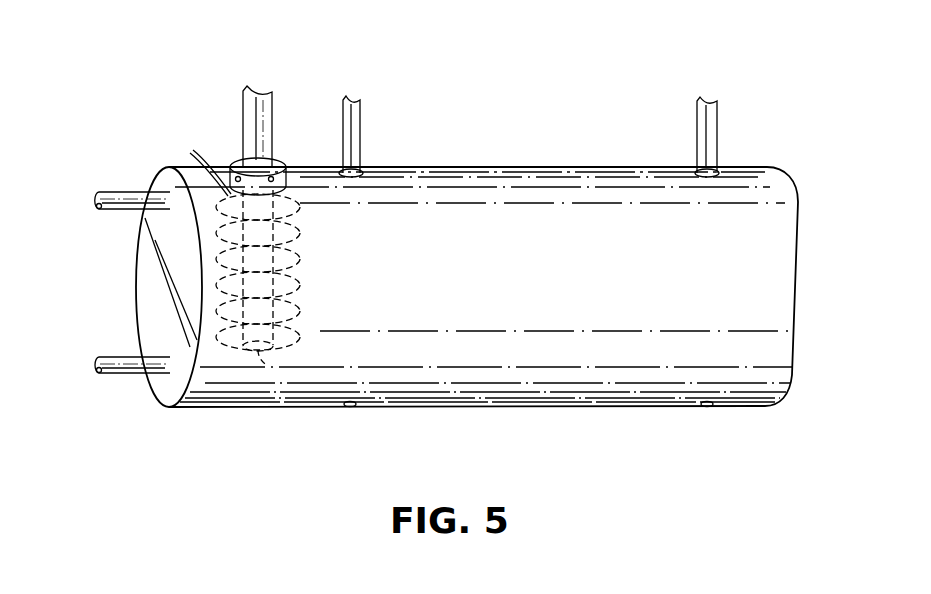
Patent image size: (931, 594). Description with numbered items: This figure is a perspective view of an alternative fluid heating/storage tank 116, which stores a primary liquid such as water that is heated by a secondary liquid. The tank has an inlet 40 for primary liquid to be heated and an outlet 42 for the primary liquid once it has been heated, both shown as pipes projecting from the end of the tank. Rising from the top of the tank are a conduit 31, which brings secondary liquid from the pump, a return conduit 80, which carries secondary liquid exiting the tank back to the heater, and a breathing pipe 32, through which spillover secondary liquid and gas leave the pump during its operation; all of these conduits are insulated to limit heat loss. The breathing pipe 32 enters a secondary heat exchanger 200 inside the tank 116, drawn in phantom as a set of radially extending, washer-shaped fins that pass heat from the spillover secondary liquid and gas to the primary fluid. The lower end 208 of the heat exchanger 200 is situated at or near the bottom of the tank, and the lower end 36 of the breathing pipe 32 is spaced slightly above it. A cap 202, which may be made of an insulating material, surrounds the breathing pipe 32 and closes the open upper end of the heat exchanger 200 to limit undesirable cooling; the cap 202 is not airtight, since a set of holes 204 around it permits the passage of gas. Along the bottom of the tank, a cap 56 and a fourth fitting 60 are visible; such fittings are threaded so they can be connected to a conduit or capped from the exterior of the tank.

The fluid heating/storage tank 116 is at (556, 132).
The breathing pipe 32 is at (243, 118).
The conduit 31 is at (362, 117).
The return conduit 80 is at (717, 113).
The outlet 42 is at (114, 191).
The inlet 40 is at (110, 376).
The secondary heat exchanger 200 is at (290, 285).
The cap 202 is at (277, 161).
The set of holes 204 is at (198, 160).
The lower end of breathing tube 36 is at (250, 343).
The lower end of heat exchanger 208 is at (268, 366).
The cap 56 is at (349, 407).
The fourth fitting 60 is at (707, 407).